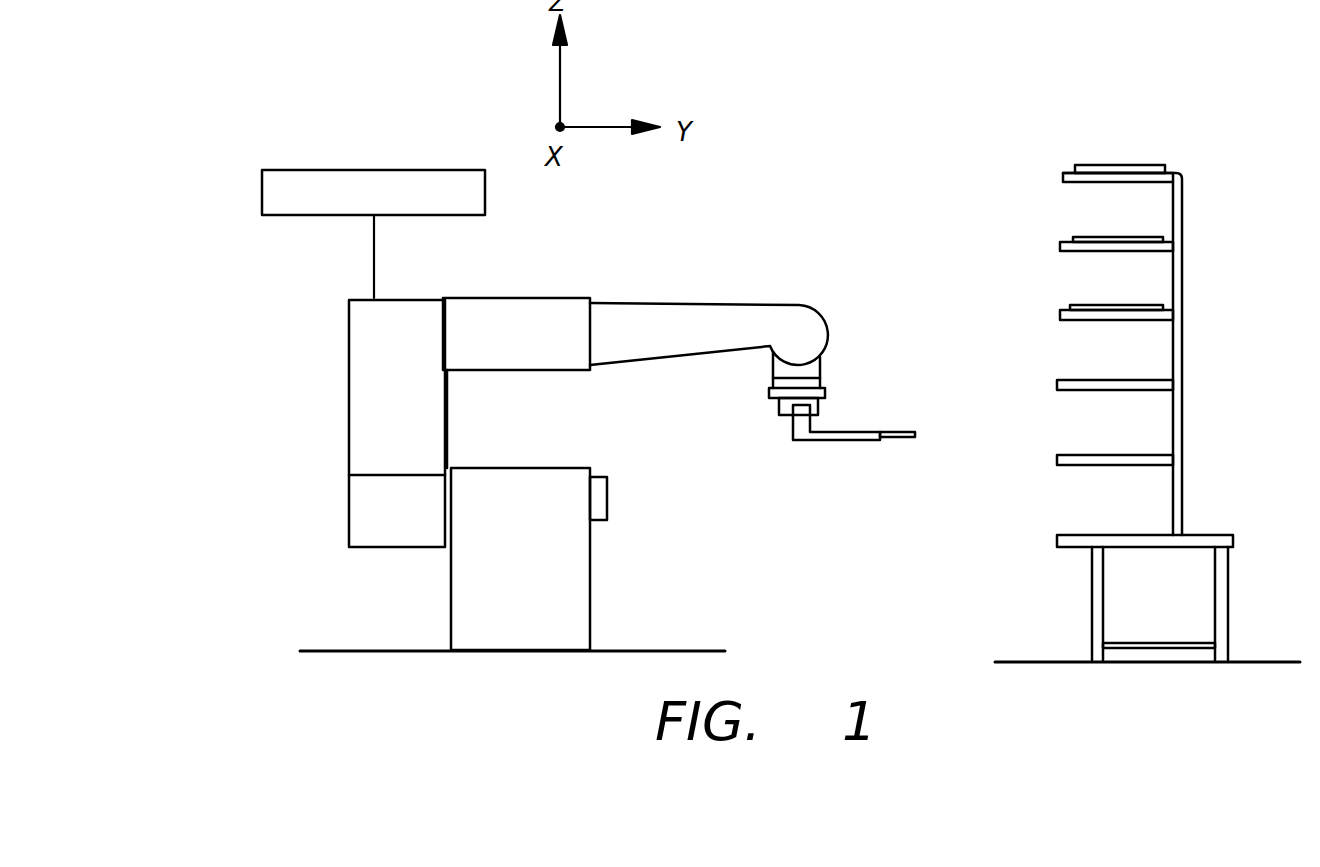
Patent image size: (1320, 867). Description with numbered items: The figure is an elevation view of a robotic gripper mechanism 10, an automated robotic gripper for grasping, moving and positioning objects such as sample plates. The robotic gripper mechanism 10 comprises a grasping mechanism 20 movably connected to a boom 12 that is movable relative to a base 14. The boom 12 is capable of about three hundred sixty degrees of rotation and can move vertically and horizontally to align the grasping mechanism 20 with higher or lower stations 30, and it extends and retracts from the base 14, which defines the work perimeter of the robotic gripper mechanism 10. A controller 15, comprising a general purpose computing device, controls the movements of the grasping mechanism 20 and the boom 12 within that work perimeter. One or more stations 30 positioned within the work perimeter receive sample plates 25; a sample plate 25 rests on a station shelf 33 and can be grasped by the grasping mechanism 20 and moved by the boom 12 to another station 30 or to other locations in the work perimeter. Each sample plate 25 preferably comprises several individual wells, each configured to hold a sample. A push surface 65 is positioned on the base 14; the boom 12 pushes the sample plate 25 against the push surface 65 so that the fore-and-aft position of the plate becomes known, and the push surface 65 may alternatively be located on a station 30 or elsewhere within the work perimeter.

The robotic gripper mechanism 10 is at (611, 380).
The boom 12 is at (708, 318).
The base 14 is at (468, 575).
The controller 15 is at (381, 170).
The grasping mechanism 20 is at (860, 456).
The sample plate 25 is at (1145, 165).
The station 30 is at (1133, 372).
The station shelf 33 is at (1097, 390).
The push surface 65 is at (605, 490).